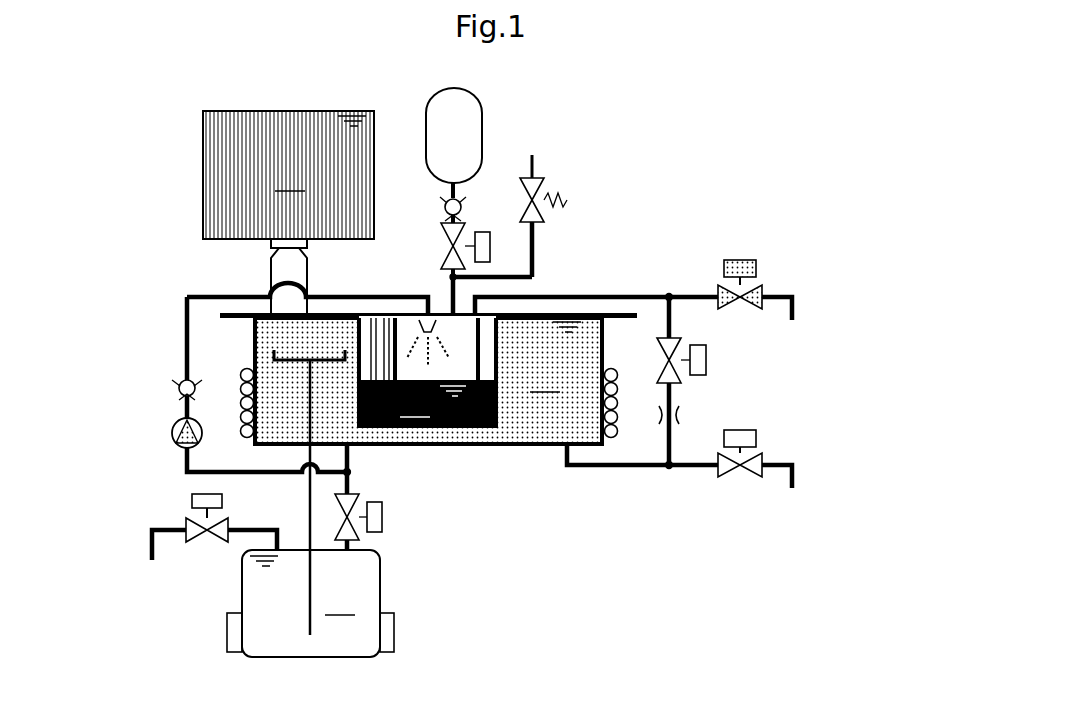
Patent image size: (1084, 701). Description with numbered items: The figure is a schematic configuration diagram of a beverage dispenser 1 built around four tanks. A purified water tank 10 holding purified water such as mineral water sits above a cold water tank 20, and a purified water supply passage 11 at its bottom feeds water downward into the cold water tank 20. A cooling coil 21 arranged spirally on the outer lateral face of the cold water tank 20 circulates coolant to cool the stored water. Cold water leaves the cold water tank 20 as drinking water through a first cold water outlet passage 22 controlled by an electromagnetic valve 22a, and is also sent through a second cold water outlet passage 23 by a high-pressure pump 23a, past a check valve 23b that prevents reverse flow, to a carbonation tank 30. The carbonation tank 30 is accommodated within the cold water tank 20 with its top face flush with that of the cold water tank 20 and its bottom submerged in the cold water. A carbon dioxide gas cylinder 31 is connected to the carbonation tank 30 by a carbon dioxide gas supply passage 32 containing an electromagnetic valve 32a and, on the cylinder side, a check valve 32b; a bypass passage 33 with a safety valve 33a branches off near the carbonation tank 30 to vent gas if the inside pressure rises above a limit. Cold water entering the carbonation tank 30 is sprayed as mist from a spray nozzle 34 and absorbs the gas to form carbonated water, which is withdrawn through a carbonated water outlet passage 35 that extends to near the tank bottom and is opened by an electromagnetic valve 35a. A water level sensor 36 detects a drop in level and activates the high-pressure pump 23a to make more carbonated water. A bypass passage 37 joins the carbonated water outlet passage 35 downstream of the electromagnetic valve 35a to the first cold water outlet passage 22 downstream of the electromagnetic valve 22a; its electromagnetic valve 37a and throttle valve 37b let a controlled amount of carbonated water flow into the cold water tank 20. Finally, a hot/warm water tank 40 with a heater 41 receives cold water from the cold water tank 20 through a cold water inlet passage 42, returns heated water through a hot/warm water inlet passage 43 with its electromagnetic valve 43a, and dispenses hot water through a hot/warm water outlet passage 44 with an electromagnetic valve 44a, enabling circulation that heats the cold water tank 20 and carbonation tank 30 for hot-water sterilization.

The beverage dispenser 1 is at (138, 140).
The purified water tank 10 is at (203, 190).
The purified water supply passage 11 is at (276, 272).
The cold water tank 20 is at (492, 447).
The cooling coil 21 is at (619, 434).
The first cold water outlet passage 22 is at (600, 470).
The electromagnetic valve 22a is at (753, 480).
The second cold water outlet passage 23 is at (186, 476).
The high-pressure pump 23a is at (173, 425).
The check valve 23b is at (180, 383).
The carbonation tank 30 is at (445, 430).
The carbon dioxide gas cylinder 31 is at (474, 122).
The carbon dioxide gas supply passage 32 is at (450, 275).
The electromagnetic valve 32a is at (483, 231).
The check valve 32b is at (446, 206).
The bypass passage 33 is at (535, 264).
The safety valve 33a is at (536, 180).
The spray nozzle 34 is at (434, 321).
The carbonated water outlet passage 35 is at (607, 296).
The electromagnetic valve 35a is at (745, 261).
The water level sensor 36 is at (387, 318).
The bypass passage 37 is at (673, 320).
The electromagnetic valve 37a is at (708, 362).
The throttle valve 37b is at (680, 414).
The hot/warm water tank 40 is at (382, 585).
The heater 41 is at (228, 635).
The cold water inlet passage 42 is at (308, 501).
The hot/warm water inlet passage 43 is at (353, 489).
The electromagnetic valve 43a is at (383, 518).
The hot/warm water outlet passage 44 is at (238, 535).
The electromagnetic valve 44a is at (180, 500).